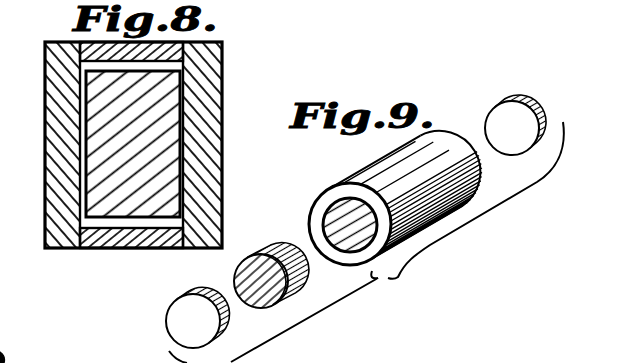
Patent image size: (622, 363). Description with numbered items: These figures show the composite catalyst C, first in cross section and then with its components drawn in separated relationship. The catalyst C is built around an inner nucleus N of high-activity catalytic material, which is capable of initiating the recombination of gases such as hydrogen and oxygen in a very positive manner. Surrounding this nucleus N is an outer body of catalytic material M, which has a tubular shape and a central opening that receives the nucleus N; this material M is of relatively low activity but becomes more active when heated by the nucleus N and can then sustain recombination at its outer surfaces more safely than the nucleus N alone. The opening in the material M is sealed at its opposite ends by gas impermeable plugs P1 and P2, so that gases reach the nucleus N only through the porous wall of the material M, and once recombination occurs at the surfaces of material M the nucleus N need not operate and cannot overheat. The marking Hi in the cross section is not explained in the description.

In FIG. 8, the catalyst C is at (223, 112).
In FIG. 9, the catalyst C is at (421, 252).
In FIG. 8, the outer catalytic material M is at (200, 97).
In FIG. 9, the outer catalytic material M is at (370, 177).
In FIG. 8, the gas impermeable plug P1 is at (118, 234).
In FIG. 9, the gas impermeable plug P1 is at (176, 320).
In FIG. 8, the gas impermeable plug P2 is at (160, 48).
In FIG. 9, the gas impermeable plug P2 is at (500, 112).
In FIG. 8, the hot-pressed insert Hi is at (105, 115).
In FIG. 9, the nucleus N is at (277, 253).